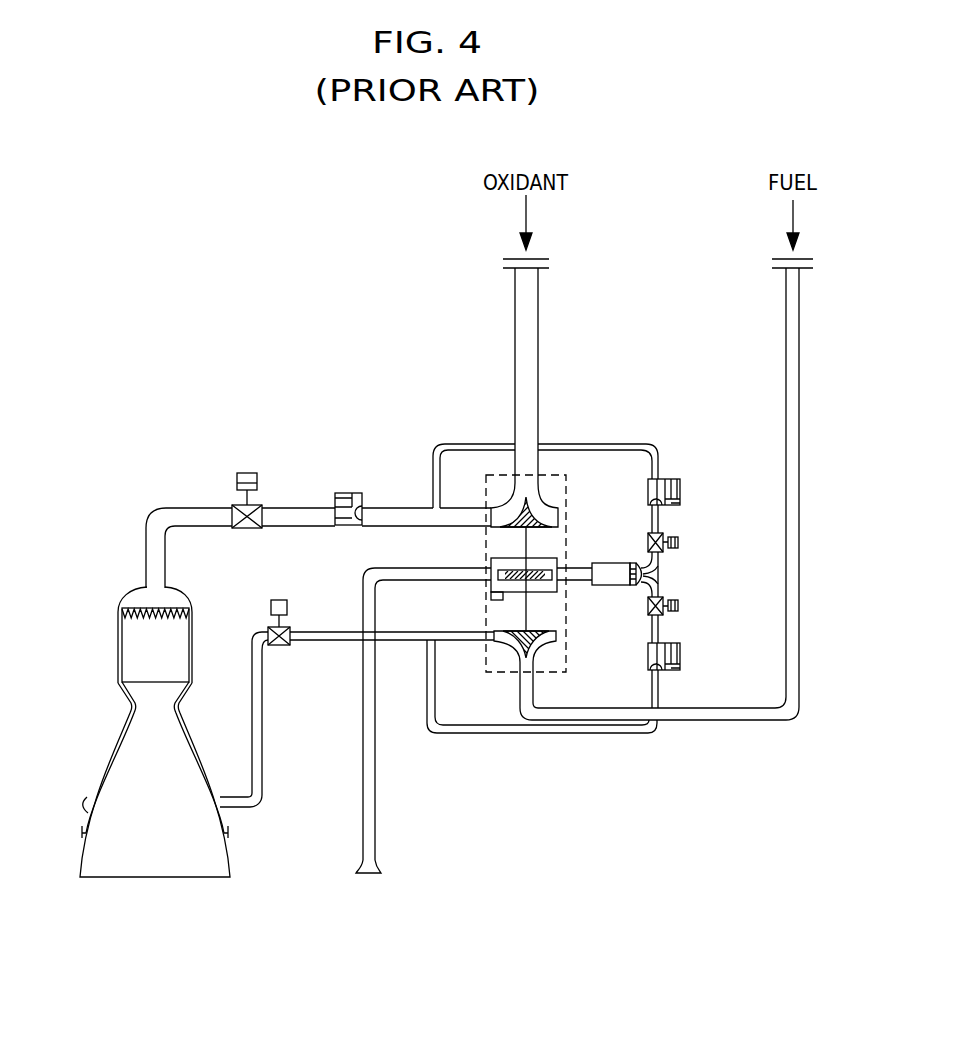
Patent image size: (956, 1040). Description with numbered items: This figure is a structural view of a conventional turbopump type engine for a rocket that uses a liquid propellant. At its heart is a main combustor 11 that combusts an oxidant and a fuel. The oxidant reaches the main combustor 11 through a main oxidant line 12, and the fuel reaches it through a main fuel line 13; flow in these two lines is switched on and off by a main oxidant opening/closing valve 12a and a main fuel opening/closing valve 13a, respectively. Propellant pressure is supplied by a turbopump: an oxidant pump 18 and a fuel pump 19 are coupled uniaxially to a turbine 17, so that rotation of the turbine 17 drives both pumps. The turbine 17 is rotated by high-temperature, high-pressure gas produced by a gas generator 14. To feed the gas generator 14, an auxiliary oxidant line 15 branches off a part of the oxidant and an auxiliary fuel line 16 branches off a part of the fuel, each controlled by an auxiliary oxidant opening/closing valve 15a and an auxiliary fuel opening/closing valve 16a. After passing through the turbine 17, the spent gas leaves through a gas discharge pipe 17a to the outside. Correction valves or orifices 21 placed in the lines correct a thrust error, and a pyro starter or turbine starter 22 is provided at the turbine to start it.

The main combustor 11 is at (118, 661).
The main oxidant line 12 is at (393, 507).
The main oxidant opening/closing valve 12a is at (247, 473).
The main fuel line 13 is at (402, 640).
The main fuel opening/closing valve 13a is at (280, 647).
The gas generator 14 is at (612, 563).
The auxiliary oxidant line 15 is at (592, 444).
The auxiliary oxidant opening/closing valve 15a is at (680, 544).
The auxiliary fuel line 16 is at (624, 734).
The auxiliary fuel opening/closing valve 16a is at (680, 607).
The turbine 17 is at (500, 570).
The gas discharge pipe 17a is at (372, 852).
The oxidant pump 18 is at (540, 520).
The fuel pump 19 is at (520, 646).
The correction valves or orifices 21 is at (350, 493).
The pyro starter or turbine starter 22 is at (491, 597).